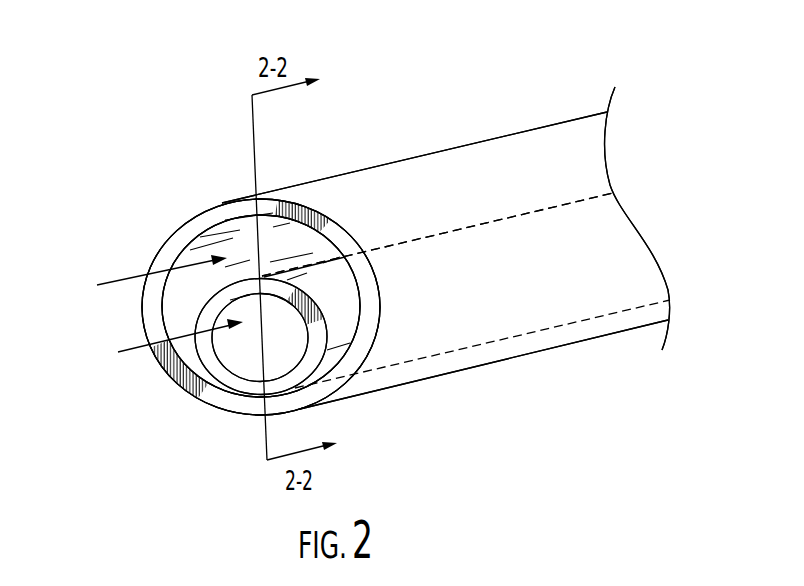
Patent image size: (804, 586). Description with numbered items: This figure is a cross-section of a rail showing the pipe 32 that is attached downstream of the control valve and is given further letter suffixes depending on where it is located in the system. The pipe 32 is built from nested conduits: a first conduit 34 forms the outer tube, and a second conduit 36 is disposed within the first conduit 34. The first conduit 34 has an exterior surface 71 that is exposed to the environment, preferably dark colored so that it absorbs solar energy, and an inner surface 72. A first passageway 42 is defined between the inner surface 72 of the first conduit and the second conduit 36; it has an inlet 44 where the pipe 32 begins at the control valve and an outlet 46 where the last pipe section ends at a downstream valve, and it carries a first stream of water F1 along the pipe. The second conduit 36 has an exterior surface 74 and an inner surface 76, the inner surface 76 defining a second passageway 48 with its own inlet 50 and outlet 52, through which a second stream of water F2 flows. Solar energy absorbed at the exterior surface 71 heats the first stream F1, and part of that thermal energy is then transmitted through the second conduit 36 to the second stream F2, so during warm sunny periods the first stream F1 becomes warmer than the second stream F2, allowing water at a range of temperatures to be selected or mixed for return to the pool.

The pipe 32 is at (605, 283).
The first conduit 34 is at (470, 367).
The second conduit 36 is at (283, 270).
The first passageway 42 is at (193, 257).
The inlet 44 is at (97, 433).
The outlet 46 is at (707, 235).
The second passageway 48 is at (258, 342).
The inlet 50 is at (98, 390).
The outlet 52 is at (707, 193).
The exterior surface 71 is at (468, 145).
The inner surface 72 is at (186, 277).
The exterior surface 74 is at (313, 283).
The inner surface 76 is at (226, 326).
The first stream of water F1 is at (149, 277).
The second stream of water F2 is at (170, 335).